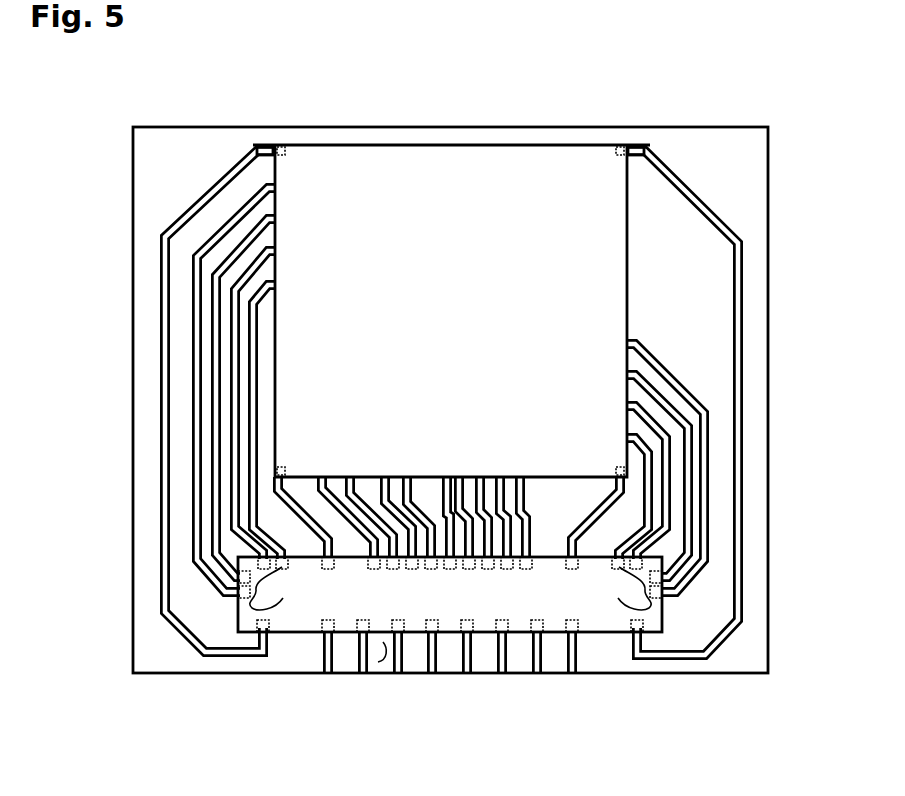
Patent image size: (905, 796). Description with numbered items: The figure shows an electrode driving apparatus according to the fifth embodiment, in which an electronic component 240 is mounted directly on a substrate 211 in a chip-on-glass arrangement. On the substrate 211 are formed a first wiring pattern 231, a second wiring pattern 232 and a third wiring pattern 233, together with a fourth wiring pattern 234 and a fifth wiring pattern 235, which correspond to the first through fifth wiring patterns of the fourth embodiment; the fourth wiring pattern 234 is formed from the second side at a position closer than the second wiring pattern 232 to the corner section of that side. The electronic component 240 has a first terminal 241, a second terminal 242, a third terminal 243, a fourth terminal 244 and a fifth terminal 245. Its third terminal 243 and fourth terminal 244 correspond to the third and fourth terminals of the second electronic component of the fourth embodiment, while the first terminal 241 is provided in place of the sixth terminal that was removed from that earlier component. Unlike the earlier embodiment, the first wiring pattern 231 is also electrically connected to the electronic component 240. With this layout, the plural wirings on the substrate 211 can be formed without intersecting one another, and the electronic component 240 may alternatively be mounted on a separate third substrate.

The substrate 211 is at (748, 158).
The first wiring pattern 231 is at (303, 473).
The second wiring pattern 232 is at (281, 177).
The third wiring pattern 233 is at (300, 518).
The fourth wiring pattern 234 is at (262, 148).
The fifth wiring pattern 235 is at (322, 677).
The electronic component 240 is at (660, 622).
The first terminal 241 is at (455, 592).
The second terminal 242 is at (237, 603).
The third terminal 243 is at (330, 570).
The fourth terminal 244 is at (262, 634).
The fifth terminal 245 is at (378, 662).